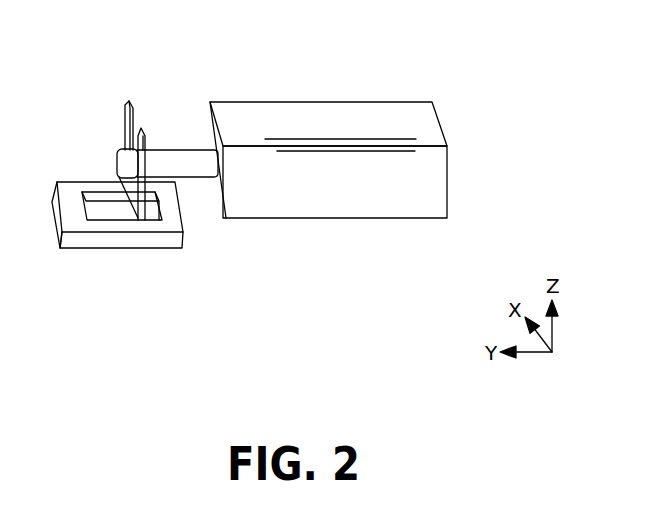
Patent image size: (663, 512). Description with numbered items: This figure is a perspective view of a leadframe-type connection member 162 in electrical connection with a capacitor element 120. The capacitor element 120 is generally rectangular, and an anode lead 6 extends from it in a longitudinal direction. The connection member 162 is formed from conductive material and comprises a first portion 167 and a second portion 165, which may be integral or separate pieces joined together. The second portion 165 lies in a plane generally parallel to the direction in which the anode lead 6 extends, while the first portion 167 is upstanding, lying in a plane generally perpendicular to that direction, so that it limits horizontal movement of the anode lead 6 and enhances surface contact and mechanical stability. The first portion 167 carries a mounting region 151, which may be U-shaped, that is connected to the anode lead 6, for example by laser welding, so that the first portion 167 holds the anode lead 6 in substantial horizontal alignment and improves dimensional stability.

The anode lead 6 is at (193, 162).
The capacitor element 120 is at (386, 124).
The mounting region 151 is at (145, 125).
The connection member 162 is at (85, 255).
The second portion 165 is at (183, 242).
The first portion 167 is at (123, 150).